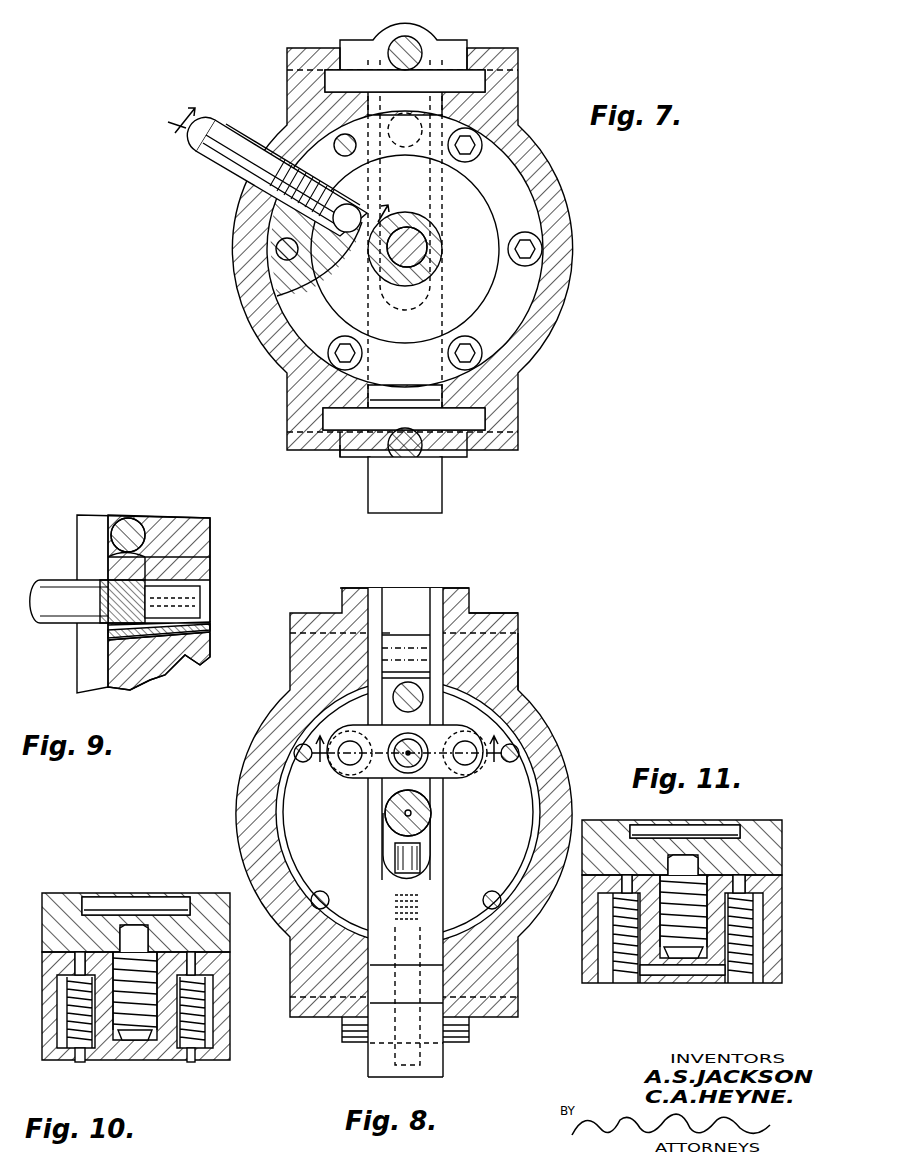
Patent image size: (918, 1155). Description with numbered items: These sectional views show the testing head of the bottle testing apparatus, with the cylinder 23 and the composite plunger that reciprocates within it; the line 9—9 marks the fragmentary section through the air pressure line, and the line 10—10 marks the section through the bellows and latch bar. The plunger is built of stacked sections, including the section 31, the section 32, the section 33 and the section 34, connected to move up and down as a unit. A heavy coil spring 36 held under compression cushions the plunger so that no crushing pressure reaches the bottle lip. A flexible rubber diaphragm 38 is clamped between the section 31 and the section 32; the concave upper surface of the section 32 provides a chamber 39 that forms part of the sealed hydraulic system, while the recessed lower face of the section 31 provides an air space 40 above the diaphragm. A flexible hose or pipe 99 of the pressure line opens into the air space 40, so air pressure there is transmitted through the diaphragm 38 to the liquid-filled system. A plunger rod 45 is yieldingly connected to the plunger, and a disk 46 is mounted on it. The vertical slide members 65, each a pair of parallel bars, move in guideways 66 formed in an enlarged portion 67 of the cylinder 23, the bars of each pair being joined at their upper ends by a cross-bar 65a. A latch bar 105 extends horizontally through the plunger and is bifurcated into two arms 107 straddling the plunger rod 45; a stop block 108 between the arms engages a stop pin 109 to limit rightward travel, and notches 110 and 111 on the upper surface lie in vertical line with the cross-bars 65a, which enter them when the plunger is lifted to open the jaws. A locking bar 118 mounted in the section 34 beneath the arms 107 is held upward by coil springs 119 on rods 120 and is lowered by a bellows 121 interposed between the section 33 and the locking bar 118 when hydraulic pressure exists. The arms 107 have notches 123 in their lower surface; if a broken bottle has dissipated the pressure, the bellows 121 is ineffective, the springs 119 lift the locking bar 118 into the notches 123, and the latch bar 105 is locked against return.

In FIG. 7, the section line 9— 9 is at (281, 165).
In FIG. 8, the section line 10— 10 is at (402, 759).
In FIG. 7, the cylinder 23 is at (560, 300).
In FIG. 8, the cylinder 23 is at (560, 752).
In FIG. 9, the plunger section 31 is at (205, 579).
In FIG. 9, the plunger section 32 is at (155, 686).
In FIG. 10, the plunger section 33 is at (215, 925).
In FIG. 11, the plunger section 33 is at (745, 822).
In FIG. 10, the plunger section 34 is at (220, 996).
In FIG. 11, the plunger section 34 is at (596, 958).
In FIG. 9, the heavy coil spring 36 is at (128, 522).
In FIG. 9, the diaphragm 38 is at (200, 628).
In FIG. 9, the chamber 39 is at (200, 640).
In FIG. 7, the air space 40 is at (292, 272).
In FIG. 9, the air space 40 is at (175, 606).
In FIG. 7, the plunger rod 45 is at (422, 249).
In FIG. 8, the plunger rod 45 is at (432, 812).
In FIG. 10, the disk 46 is at (150, 895).
In FIG. 11, the disk 46 is at (712, 812).
In FIG. 7, the vertical slide member 65 is at (440, 45).
In FIG. 8, the vertical slide member 65 is at (470, 620).
In FIG. 7, the cross-bar 65a is at (356, 459).
In FIG. 8, the guideways 66 is at (496, 643).
In FIG. 8, the enlarged portion of the cylinder 67 is at (512, 660).
In FIG. 7, the flexible hose or pipe 99 is at (238, 160).
In FIG. 9, the flexible hose or pipe 99 is at (60, 579).
In FIG. 7, the latch bar 105 is at (445, 505).
In FIG. 8, the latch bar 105 is at (445, 882).
In FIG. 8, the arms 107 is at (380, 794).
In FIG. 10, the arms 107 is at (150, 952).
In FIG. 8, the stop block 108 is at (416, 640).
In FIG. 8, the stop pin 109 is at (425, 700).
In FIG. 7, the notch 110 is at (410, 398).
In FIG. 8, the notch 110 is at (470, 1020).
In FIG. 7, the notch 111 is at (377, 104).
In FIG. 8, the notch 111 is at (382, 632).
In FIG. 10, the locking bar 118 is at (150, 1045).
In FIG. 11, the locking bar 118 is at (683, 960).
In FIG. 10, the coil springs 119 is at (195, 1020).
In FIG. 11, the coil springs 119 is at (615, 975).
In FIG. 8, the rods 120 is at (350, 744).
In FIG. 10, the rods 120 is at (200, 1055).
In FIG. 11, the rods 120 is at (740, 880).
In FIG. 8, the bellows 121 is at (408, 742).
In FIG. 10, the bellows 121 is at (100, 1052).
In FIG. 11, the bellows 121 is at (700, 948).
In FIG. 8, the notches 123 is at (380, 815).
In FIG. 11, the notches 123 is at (642, 977).